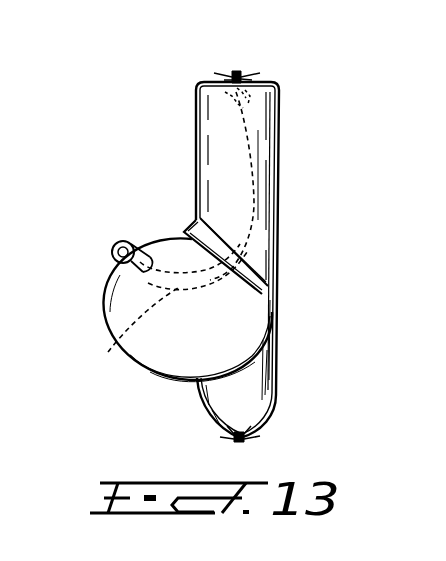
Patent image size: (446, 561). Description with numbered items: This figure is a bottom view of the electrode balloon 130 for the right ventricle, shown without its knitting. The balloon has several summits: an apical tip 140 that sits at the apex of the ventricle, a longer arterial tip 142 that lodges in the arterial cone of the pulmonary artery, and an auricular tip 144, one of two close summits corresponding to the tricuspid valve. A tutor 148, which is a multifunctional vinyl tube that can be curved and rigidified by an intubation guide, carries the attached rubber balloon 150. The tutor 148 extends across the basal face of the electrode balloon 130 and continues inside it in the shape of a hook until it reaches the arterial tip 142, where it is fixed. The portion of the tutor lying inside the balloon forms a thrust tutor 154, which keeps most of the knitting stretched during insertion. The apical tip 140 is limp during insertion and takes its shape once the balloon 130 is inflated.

The electrode balloon 130 is at (181, 97).
The arterial tip 142 is at (264, 79).
The auricular tip 144 is at (110, 302).
The tutor 148 is at (128, 226).
The thrust tutor 154 is at (118, 340).
The rubber balloon 150 is at (292, 349).
The apical tip 140 is at (226, 438).